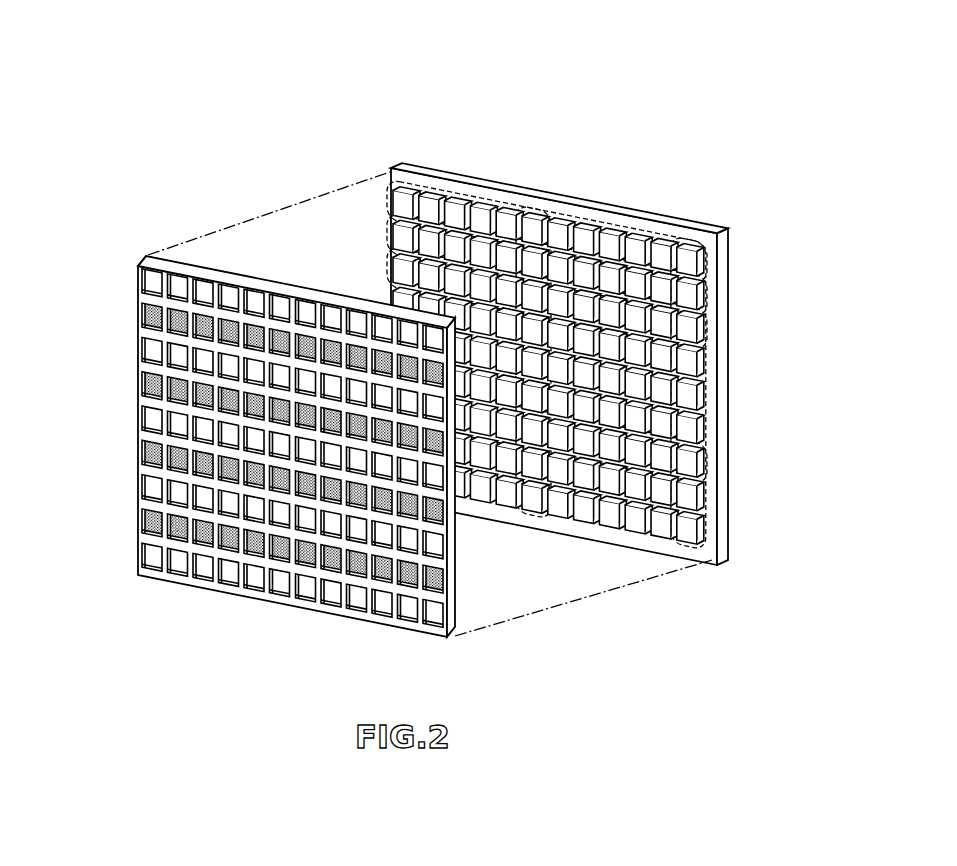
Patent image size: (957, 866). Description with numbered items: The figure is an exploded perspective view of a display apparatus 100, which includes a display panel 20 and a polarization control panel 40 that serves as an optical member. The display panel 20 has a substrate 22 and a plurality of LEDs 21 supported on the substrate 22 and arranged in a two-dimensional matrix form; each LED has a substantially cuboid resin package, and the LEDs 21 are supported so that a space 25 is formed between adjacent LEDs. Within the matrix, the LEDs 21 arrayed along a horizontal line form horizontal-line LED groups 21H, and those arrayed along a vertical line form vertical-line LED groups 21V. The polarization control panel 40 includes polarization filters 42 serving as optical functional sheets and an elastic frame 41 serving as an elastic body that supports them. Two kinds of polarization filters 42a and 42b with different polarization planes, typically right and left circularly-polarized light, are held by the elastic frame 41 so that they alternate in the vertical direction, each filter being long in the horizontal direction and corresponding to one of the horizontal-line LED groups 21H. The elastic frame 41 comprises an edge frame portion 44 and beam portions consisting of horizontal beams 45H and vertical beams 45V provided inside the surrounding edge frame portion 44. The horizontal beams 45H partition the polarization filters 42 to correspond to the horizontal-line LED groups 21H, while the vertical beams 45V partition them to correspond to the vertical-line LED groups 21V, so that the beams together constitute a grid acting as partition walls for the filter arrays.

The display apparatus 100 is at (398, 78).
The display panel 20 is at (568, 192).
The LEDs 21 is at (455, 208).
The horizontal-line LED groups 21H is at (715, 266).
The vertical-line LED groups 21V is at (720, 528).
The substrate 22 is at (508, 182).
The space 25 is at (393, 223).
The polarization control panel 40 is at (318, 282).
The elastic frame 41 is at (460, 633).
The polarization filters 42 is at (239, 445).
The polarization filter 42a is at (150, 283).
The polarization filter 42b is at (150, 318).
The edge frame portion 44 is at (276, 286).
The horizontal beams 45H is at (207, 548).
The vertical beams 45V is at (393, 540).